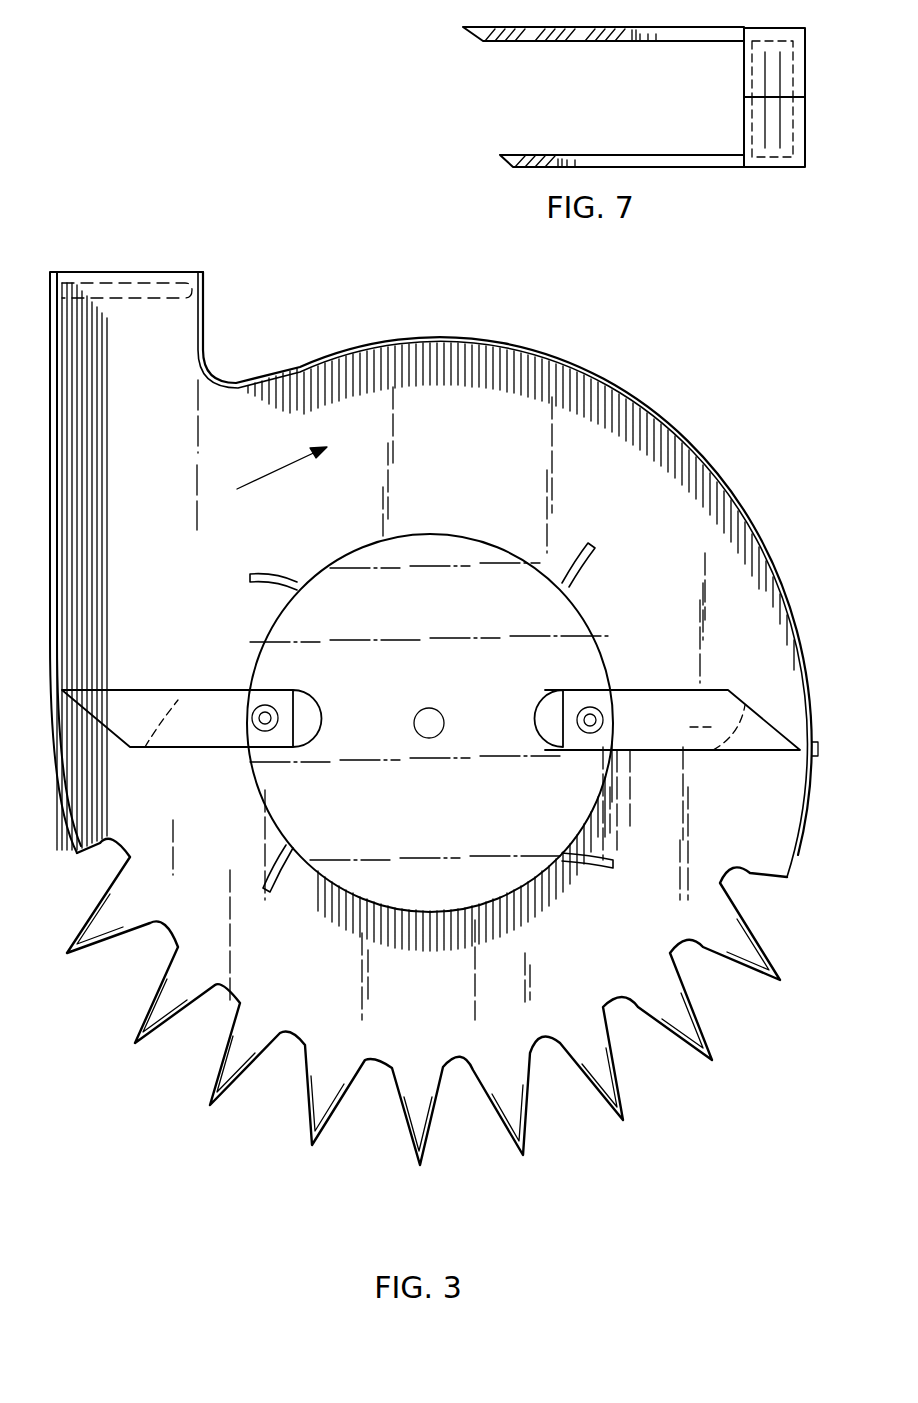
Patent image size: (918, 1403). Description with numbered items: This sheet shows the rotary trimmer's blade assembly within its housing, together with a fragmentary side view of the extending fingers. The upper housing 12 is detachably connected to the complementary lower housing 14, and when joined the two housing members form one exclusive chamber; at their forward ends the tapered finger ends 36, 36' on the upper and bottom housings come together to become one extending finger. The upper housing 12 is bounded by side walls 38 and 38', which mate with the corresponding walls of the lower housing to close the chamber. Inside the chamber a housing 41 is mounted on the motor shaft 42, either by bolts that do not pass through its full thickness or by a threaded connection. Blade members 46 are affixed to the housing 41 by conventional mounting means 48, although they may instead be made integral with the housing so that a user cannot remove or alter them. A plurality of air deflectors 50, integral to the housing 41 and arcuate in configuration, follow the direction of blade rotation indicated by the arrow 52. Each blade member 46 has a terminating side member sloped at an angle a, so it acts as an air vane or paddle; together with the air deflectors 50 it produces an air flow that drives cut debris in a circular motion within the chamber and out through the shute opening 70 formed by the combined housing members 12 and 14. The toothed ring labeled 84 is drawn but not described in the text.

In FIG. 7, the upper housing 12 is at (615, 7).
In FIG. 3, the upper housing 12 is at (660, 415).
In FIG. 7, the lower housing 14 is at (665, 168).
In FIG. 7, the finger end 36 is at (799, 62).
In FIG. 3, the finger end 36 is at (423, 1022).
In FIG. 7, the finger end 36' is at (804, 132).
In FIG. 3, the side wall 38 is at (104, 562).
In FIG. 3, the side wall 38' is at (753, 465).
In FIG. 3, the housing 41 is at (418, 535).
In FIG. 3, the motor shaft 42 is at (428, 708).
In FIG. 3, the blade member 46 is at (150, 691).
In FIG. 3, the mounting means 48 is at (253, 718).
In FIG. 3, the air deflector 50 is at (285, 572).
In FIG. 3, the arrow 52 is at (278, 466).
In FIG. 3, the shute opening 70 is at (108, 272).
In FIG. 7, the toothed ring 84 is at (650, 124).
In FIG. 3, the toothed ring 84 is at (155, 943).
In FIG. 3, the angle a is at (443, 725).